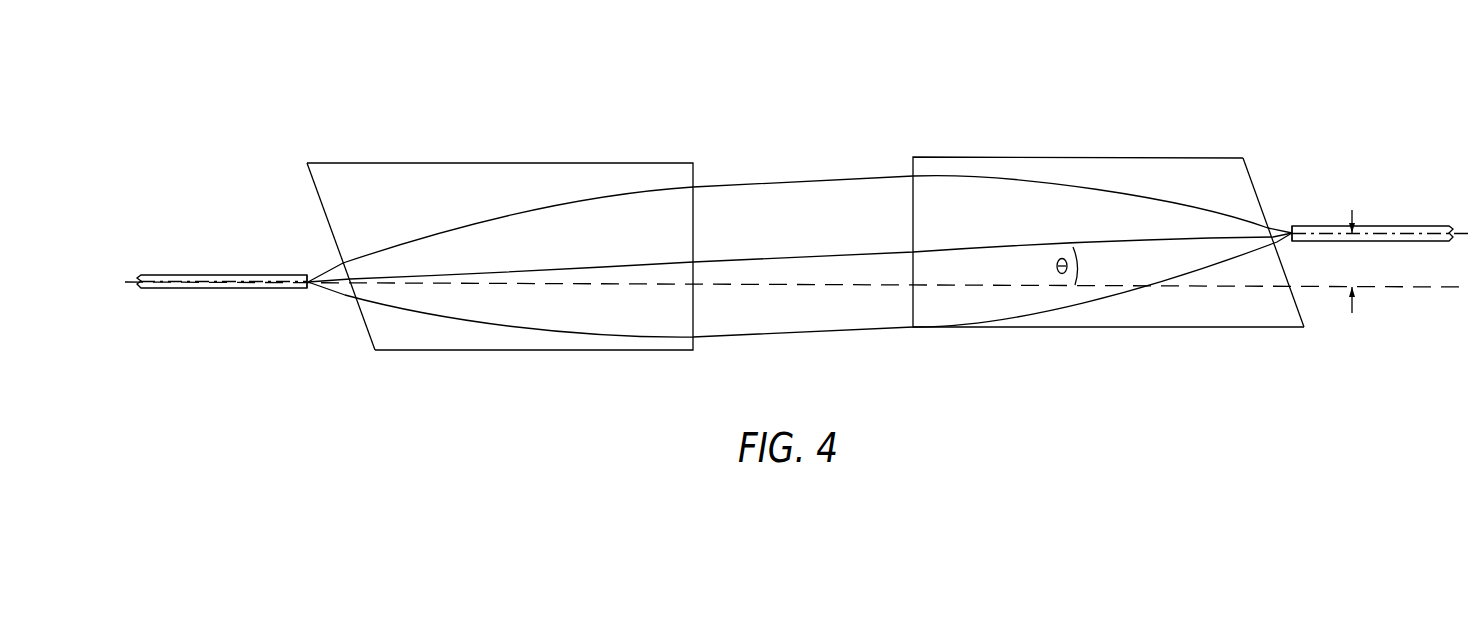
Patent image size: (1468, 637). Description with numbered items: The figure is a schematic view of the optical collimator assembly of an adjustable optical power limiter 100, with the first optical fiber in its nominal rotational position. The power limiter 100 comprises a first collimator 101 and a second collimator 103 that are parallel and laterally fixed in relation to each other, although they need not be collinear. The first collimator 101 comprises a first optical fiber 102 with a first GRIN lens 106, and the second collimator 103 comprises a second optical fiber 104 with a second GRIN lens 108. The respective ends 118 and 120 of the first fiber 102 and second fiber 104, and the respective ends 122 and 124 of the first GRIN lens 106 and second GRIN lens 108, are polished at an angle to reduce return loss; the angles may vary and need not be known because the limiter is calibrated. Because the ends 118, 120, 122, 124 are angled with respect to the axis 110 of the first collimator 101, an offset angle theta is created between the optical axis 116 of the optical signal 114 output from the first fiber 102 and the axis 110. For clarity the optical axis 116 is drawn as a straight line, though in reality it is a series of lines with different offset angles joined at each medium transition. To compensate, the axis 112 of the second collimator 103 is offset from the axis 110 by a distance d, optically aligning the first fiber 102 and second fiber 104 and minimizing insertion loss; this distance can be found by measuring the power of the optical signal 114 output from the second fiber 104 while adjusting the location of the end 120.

The adjustable optical power limiter 100 is at (796, 210).
The first collimator 101 is at (500, 233).
The first optical fiber 102 is at (223, 281).
The second collimator 103 is at (1108, 179).
The second optical fiber 104 is at (1373, 230).
The first GRIN lens 106 is at (377, 163).
The second GRIN lens 108 is at (1018, 157).
The axis of the first collimator 110 is at (170, 289).
The axis of the second collimator 112 is at (1427, 239).
The optical signal 114 is at (818, 200).
The optical axis 116 is at (778, 258).
The end of the first fiber 118 is at (310, 268).
The end of the second fiber 120 is at (1292, 226).
The end of the first GRIN lens 122 is at (367, 330).
The end of the second GRIN lens 124 is at (1253, 175).